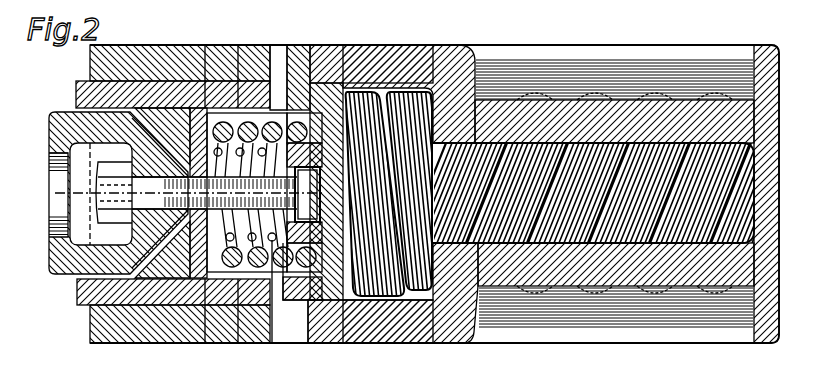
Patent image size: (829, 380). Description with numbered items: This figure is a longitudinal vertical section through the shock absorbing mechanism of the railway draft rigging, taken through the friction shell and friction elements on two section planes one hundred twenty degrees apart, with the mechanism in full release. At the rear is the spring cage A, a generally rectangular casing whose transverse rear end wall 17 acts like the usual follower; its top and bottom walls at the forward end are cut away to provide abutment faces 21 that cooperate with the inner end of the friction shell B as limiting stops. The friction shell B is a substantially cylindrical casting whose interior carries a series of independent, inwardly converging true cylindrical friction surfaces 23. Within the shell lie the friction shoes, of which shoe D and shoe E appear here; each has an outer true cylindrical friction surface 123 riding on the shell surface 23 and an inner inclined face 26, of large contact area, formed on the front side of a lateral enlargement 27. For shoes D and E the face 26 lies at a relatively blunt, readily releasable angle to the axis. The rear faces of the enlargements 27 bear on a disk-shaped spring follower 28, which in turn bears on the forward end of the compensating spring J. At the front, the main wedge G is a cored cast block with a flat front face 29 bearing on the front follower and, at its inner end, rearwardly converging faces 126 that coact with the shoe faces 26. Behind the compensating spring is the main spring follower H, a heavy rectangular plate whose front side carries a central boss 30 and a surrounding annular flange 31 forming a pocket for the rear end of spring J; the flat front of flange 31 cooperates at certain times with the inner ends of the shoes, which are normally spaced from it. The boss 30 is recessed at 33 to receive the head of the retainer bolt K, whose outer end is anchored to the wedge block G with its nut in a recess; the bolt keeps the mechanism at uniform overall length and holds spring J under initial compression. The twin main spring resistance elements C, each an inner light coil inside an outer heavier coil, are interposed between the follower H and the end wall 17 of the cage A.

The spring cage A is at (445, 44).
The friction shell B is at (182, 46).
The main spring resistance elements C is at (617, 193).
The friction shoe D is at (162, 91).
The friction shoe E is at (78, 297).
The main wedge G is at (55, 215).
The main spring follower H is at (340, 300).
The compensating spring J is at (276, 118).
The retainer bolt K is at (104, 194).
The transverse rear end wall 17 is at (773, 192).
The abutment faces 21 is at (311, 46).
The cylindrical friction surfaces 23 is at (156, 80).
The inclined face 26 is at (140, 80).
The lateral enlargement 27 is at (243, 192).
The spring follower 28 is at (208, 292).
The flat front face 29 is at (50, 116).
The central boss 30 is at (307, 194).
The annular flange 31 is at (298, 302).
The recess 33 is at (325, 184).
The outer cylindrical friction surface 123 is at (80, 75).
The rearwardly converging faces 126 is at (190, 193).